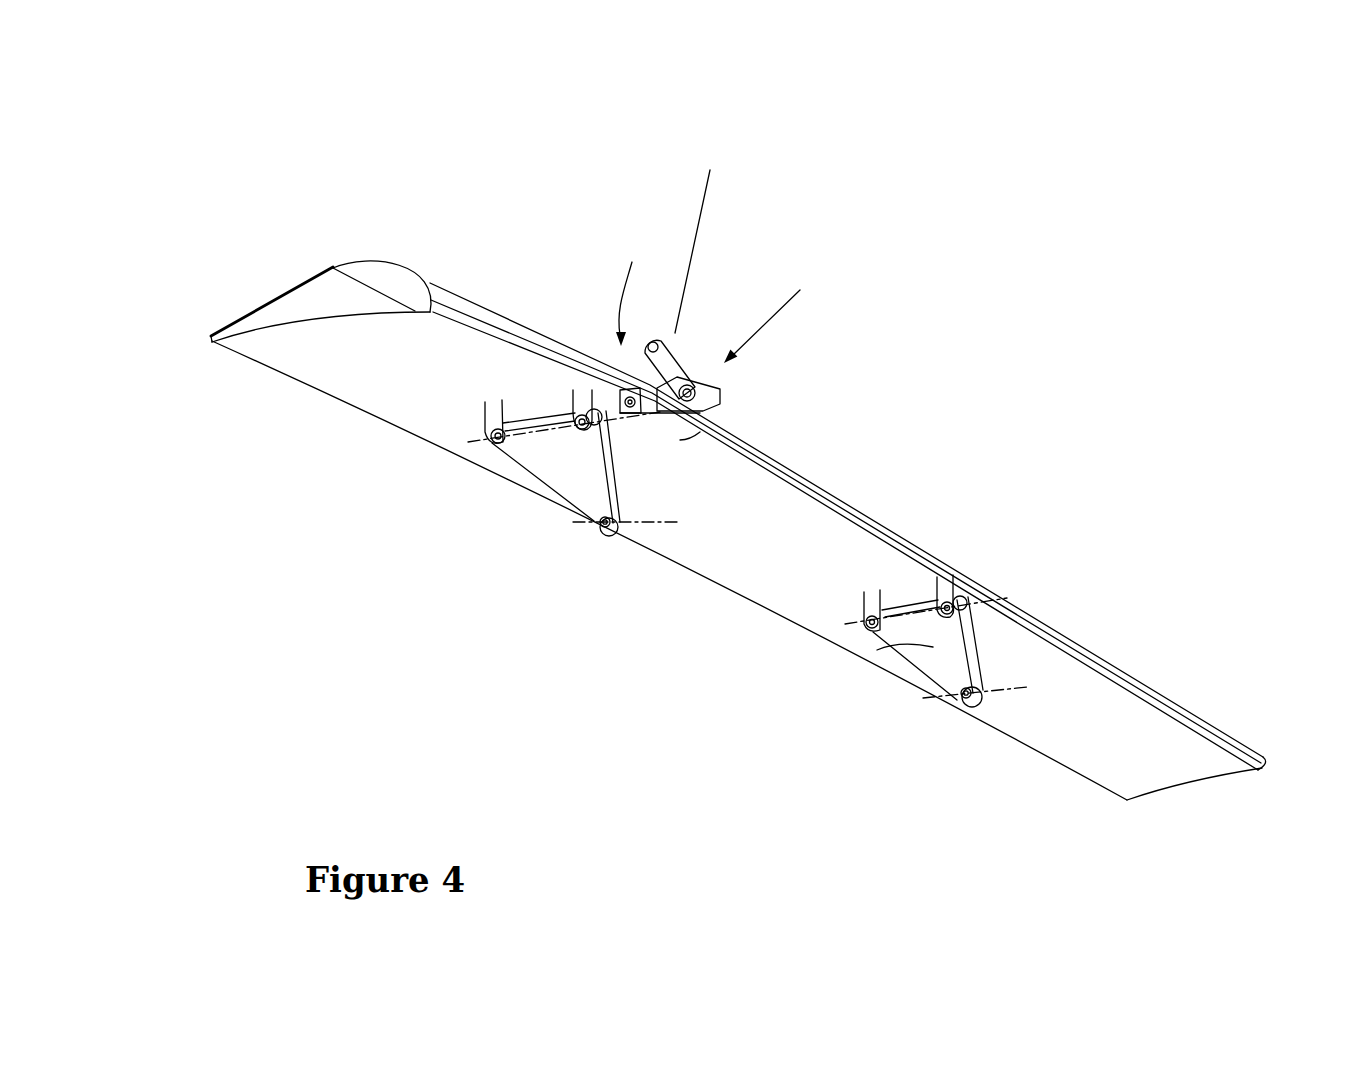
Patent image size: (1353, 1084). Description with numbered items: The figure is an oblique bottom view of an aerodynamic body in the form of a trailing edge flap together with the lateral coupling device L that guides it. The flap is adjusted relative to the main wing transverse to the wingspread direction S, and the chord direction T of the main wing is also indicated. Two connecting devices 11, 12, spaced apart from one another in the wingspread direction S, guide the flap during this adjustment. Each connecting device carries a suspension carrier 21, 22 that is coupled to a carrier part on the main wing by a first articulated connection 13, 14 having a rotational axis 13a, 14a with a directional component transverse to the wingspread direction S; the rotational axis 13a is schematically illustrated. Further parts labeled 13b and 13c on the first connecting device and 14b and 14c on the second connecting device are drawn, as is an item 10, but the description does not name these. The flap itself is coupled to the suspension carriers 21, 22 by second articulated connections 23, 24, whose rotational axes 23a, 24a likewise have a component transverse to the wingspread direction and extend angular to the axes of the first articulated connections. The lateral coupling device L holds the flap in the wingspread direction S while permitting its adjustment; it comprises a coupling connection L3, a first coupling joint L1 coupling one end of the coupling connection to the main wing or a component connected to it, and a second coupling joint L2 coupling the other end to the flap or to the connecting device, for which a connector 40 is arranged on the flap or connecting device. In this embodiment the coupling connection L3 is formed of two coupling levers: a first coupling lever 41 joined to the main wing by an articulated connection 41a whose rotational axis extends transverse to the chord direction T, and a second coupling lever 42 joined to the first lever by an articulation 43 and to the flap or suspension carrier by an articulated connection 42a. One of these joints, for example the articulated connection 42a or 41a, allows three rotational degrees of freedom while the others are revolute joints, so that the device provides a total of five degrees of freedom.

The aerodynamic body (slat) 10 is at (303, 357).
The connecting device 11 is at (490, 672).
The connecting device 12 is at (1000, 631).
The first articulated connection 13 is at (464, 369).
The rotational axis 13a is at (477, 438).
The first bearing of first coupling device 13b is at (500, 400).
The second bearing of first coupling device 13c is at (572, 392).
The first articulated connection 14 is at (929, 598).
The rotational axis 14a is at (850, 622).
The first bearing of second coupling device 14b is at (883, 587).
The second bearing of second coupling device 14c is at (960, 575).
The suspension carrier 21 is at (583, 482).
The suspension carrier 22 is at (877, 638).
The second articulated connection 23 is at (710, 532).
The rotational axis 23a is at (667, 520).
The second articulated connection 24 is at (1047, 725).
The rotational axis 24a is at (940, 697).
The connector 40 is at (725, 284).
The first coupling lever 41 is at (705, 275).
The articulated connection 41a is at (594, 343).
The second coupling lever 42 is at (711, 301).
The articulated connection 42a is at (687, 384).
The articulation 43 is at (650, 336).
The lateral coupling device L is at (880, 279).
The first coupling joint L1 is at (710, 234).
The second coupling joint L2 is at (636, 286).
The coupling connection L3 is at (782, 309).
The wingspread direction S is at (1087, 688).
The chord direction T is at (1085, 703).